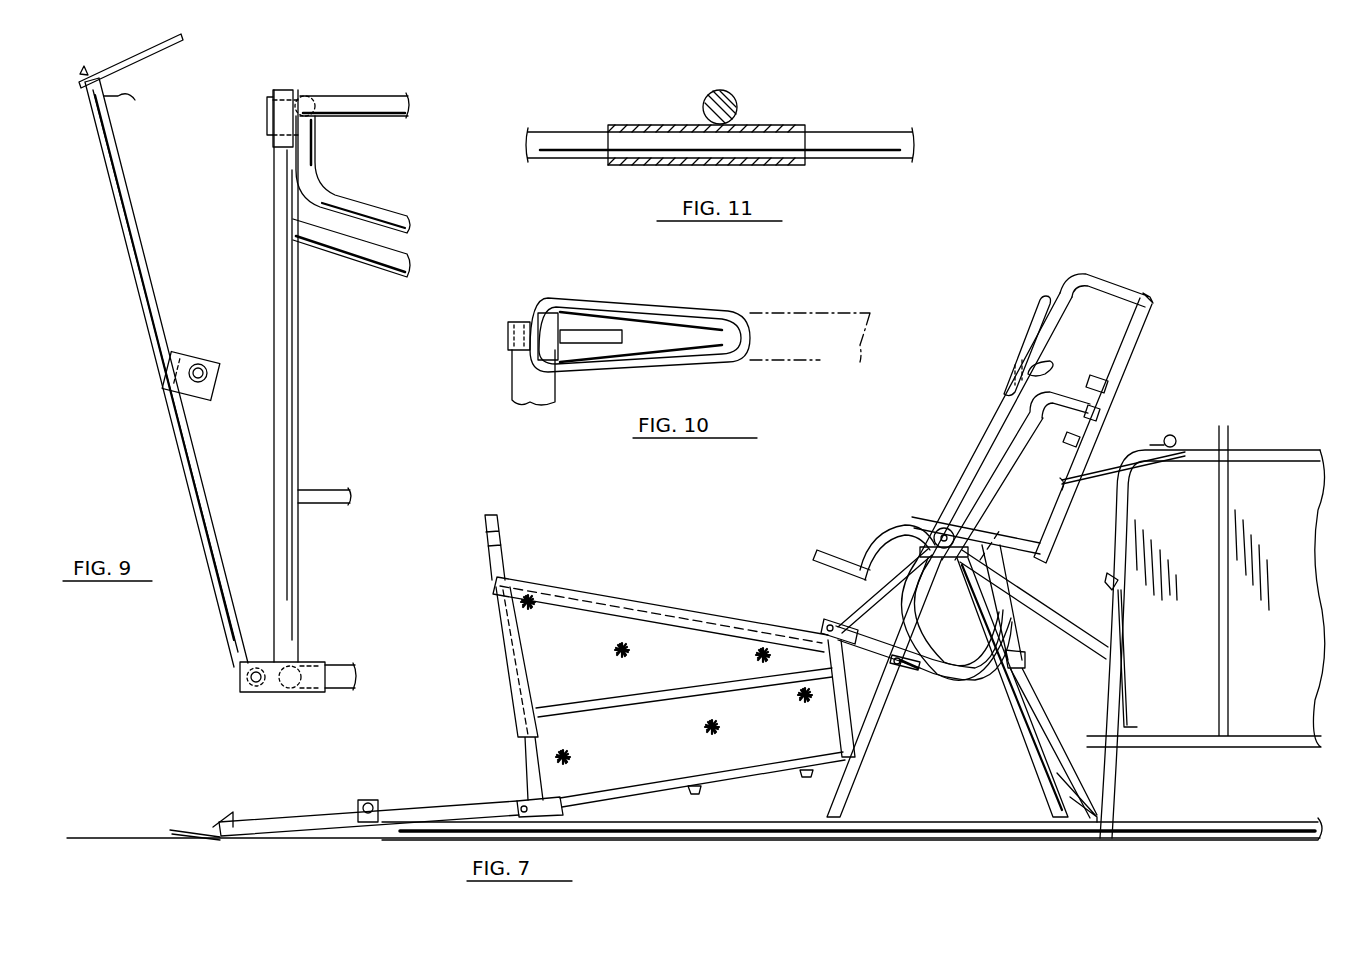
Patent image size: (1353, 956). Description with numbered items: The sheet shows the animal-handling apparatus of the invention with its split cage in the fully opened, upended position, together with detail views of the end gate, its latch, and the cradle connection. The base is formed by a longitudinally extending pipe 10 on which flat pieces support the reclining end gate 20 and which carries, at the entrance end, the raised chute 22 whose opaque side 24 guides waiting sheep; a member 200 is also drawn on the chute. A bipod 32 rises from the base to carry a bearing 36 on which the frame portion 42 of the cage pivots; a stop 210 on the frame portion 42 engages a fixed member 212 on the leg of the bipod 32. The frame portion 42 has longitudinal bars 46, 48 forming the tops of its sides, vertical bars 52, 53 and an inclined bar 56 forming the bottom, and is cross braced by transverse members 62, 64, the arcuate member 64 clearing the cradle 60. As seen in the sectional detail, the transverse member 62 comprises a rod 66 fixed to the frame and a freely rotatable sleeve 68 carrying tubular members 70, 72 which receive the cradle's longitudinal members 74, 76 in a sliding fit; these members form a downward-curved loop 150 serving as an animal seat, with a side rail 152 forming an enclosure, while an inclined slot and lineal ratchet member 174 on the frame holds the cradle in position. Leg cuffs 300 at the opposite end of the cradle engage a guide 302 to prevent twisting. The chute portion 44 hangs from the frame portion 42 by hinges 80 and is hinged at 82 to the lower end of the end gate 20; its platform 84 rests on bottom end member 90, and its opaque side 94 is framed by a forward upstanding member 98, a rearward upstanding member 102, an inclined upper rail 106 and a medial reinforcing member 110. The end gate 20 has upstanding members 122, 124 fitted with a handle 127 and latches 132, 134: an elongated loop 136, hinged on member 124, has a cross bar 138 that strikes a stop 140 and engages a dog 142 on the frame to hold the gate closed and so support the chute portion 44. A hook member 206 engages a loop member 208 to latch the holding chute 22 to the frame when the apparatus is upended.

In FIG. 7, the longitudinally extending pipe 10 is at (958, 838).
In FIG. 9, the end gate 20 is at (125, 335).
In FIG. 10, the end gate 20 is at (505, 388).
In FIG. 7, the end gate 20 is at (295, 800).
In FIG. 7, the raised chute 22 is at (1235, 760).
In FIG. 7, the side of the chute 24 is at (1265, 468).
In FIG. 7, the bipod member 32 is at (1032, 748).
In FIG. 7, the bearing 36 is at (975, 515).
In FIG. 9, the frame portion 42 is at (388, 80).
In FIG. 10, the frame portion 42 is at (815, 303).
In FIG. 7, the frame portion 42 is at (975, 688).
In FIG. 9, the chute portion 44 is at (312, 448).
In FIG. 7, the chute portion 44 is at (655, 478).
In FIG. 10, the longitudinal bar 46 is at (842, 362).
In FIG. 9, the longitudinal bar 48 is at (408, 112).
In FIG. 7, the longitudinal bar 48 is at (1040, 565).
In FIG. 7, the vertical bar 52 is at (950, 680).
In FIG. 9, the vertical bar 53 is at (320, 155).
In FIG. 7, the vertical bar 53 is at (1068, 385).
In FIG. 9, the inclined bar 56 is at (362, 215).
In FIG. 7, the inclined bar 56 is at (972, 470).
In FIG. 7, the cradle 60 is at (1155, 352).
In FIG. 11, the transverse member 62 is at (698, 92).
In FIG. 7, the transverse member 64 is at (1062, 618).
In FIG. 11, the rod 66 is at (728, 92).
In FIG. 11, the sleeve 68 is at (737, 110).
In FIG. 11, the tubular member 70 is at (798, 125).
In FIG. 7, the tubular member 72 is at (1105, 388).
In FIG. 11, the longitudinal member of the cradle 74 is at (880, 132).
In FIG. 7, the longitudinal member of the cradle 76 is at (1135, 320).
In FIG. 7, the hinge 80 is at (824, 622).
In FIG. 9, the hinge 82 is at (250, 677).
In FIG. 7, the hinge 82 is at (520, 803).
In FIG. 7, the platform 84 is at (698, 795).
In FIG. 9, the end member 90 is at (352, 680).
In FIG. 7, the end member 90 is at (638, 785).
In FIG. 7, the side of the chute portion 94 is at (666, 679).
In FIG. 9, the forward upstanding member 98 is at (272, 265).
In FIG. 7, the forward upstanding member 98 is at (500, 556).
In FIG. 7, the rearward upstanding member 102 is at (840, 728).
In FIG. 9, the inclined longitudinal upper rail 106 is at (368, 258).
In FIG. 7, the inclined longitudinal upper rail 106 is at (688, 600).
In FIG. 9, the longitudinal medial reinforcing member 110 is at (336, 505).
In FIG. 7, the longitudinal medial reinforcing member 110 is at (725, 690).
In FIG. 9, the upstanding member 122 is at (143, 222).
In FIG. 7, the upstanding member 122 is at (445, 800).
In FIG. 10, the upstanding member 124 is at (520, 320).
In FIG. 9, the handle 127 is at (197, 362).
In FIG. 7, the handle 127 is at (370, 800).
In FIG. 9, the latch 132 is at (140, 45).
In FIG. 7, the latch 132 is at (185, 815).
In FIG. 10, the latch 134 is at (618, 296).
In FIG. 9, the loop 136 is at (165, 52).
In FIG. 10, the loop 136 is at (693, 305).
In FIG. 10, the cross bar 138 is at (552, 312).
In FIG. 9, the stop 140 is at (118, 98).
In FIG. 10, the stop 140 is at (620, 340).
In FIG. 9, the dog 142 is at (330, 85).
In FIG. 10, the dog 142 is at (710, 340).
In FIG. 7, the loop 150 is at (812, 550).
In FIG. 7, the side of the cradle 152 is at (895, 525).
In FIG. 7, the slot and lineal ratchet member 174 is at (1015, 657).
In FIG. 7, the rod 200 is at (1126, 688).
In FIG. 7, the hook member 206 is at (1168, 468).
In FIG. 7, the loop member 208 is at (1065, 490).
In FIG. 7, the stop 210 is at (902, 660).
In FIG. 7, the fixed member 212 is at (898, 676).
In FIG. 7, the leg cuff 300 is at (1040, 378).
In FIG. 7, the guide 302 is at (1038, 325).